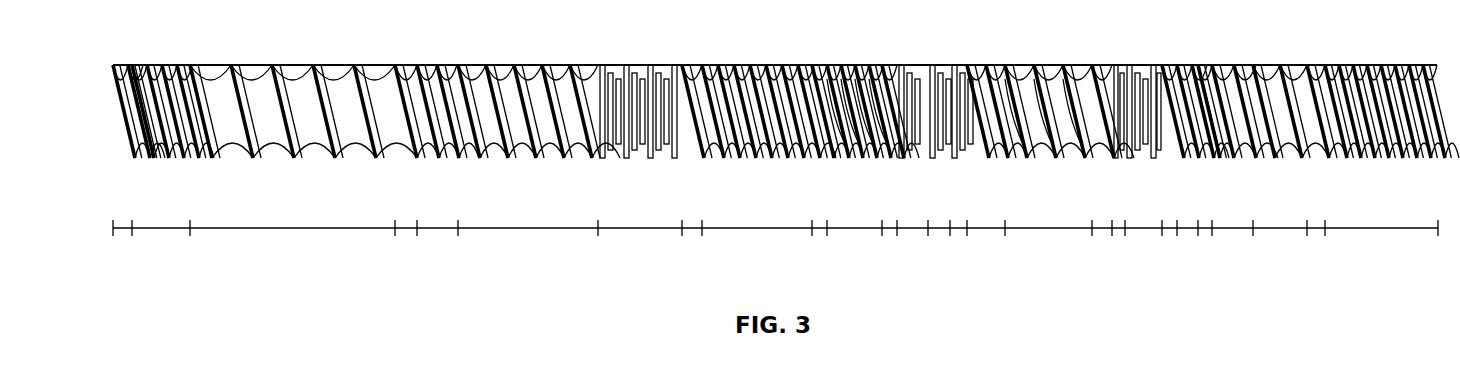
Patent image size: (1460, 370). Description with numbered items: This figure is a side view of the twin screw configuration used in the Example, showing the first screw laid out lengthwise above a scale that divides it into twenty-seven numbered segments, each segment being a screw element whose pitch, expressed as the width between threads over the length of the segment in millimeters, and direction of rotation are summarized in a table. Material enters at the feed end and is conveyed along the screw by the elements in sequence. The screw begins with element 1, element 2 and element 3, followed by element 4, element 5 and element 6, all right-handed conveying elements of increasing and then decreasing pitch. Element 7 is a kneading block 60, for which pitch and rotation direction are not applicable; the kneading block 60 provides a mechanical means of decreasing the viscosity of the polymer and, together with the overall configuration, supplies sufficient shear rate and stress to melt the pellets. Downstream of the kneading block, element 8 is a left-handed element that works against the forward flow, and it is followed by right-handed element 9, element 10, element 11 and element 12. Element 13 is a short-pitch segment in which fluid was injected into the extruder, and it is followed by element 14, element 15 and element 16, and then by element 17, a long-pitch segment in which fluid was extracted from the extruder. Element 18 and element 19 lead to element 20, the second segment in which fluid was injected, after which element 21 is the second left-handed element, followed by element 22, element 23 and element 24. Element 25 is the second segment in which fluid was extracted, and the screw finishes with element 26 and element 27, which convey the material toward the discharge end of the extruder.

The kneading block 60 is at (644, 48).
The screw element 1 is at (139, 163).
The screw element 2 is at (173, 150).
The screw element 3 is at (303, 163).
The screw element 4 is at (417, 150).
The screw element 5 is at (448, 163).
The screw element 6 is at (539, 150).
The kneading block element 7 is at (640, 163).
The screw element 8 is at (703, 150).
The screw element 9 is at (769, 163).
The screw element 10 is at (827, 150).
The screw element 11 is at (866, 163).
The screw element 12 is at (897, 150).
The screw element 13 is at (912, 163).
The screw element 14 is at (937, 150).
The screw element 15 is at (957, 163).
The screw element 16 is at (997, 150).
The screw element 17 is at (1059, 163).
The screw element 18 is at (1109, 150).
The screw element 19 is at (1117, 163).
The screw element 20 is at (1143, 150).
The screw element 21 is at (1176, 163).
The screw element 22 is at (1202, 150).
The screw element 23 is at (1213, 163).
The screw element 24 is at (1245, 150).
The screw element 25 is at (1291, 163).
The screw element 26 is at (1323, 150).
The screw element 27 is at (1392, 163).